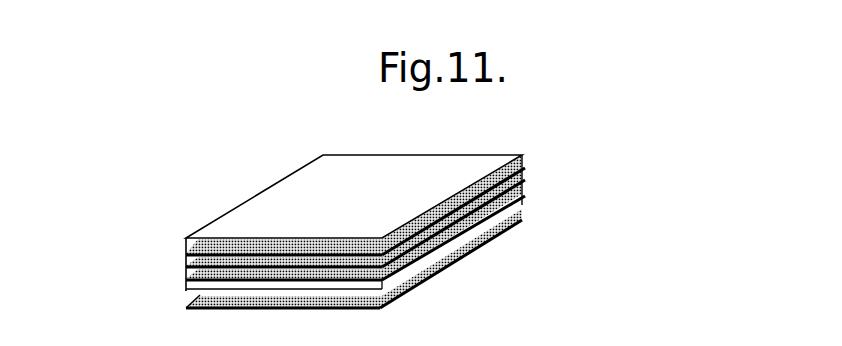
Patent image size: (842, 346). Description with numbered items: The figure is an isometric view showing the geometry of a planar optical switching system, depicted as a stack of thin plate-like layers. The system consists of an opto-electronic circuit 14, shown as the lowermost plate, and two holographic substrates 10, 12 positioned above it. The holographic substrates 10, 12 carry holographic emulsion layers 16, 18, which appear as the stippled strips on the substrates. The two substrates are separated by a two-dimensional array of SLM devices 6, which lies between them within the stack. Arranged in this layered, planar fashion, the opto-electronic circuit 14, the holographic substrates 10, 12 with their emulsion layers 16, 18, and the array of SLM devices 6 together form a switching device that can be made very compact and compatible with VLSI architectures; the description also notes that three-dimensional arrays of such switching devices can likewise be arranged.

The holographic substrate 12 is at (493, 158).
The SLM device 6 is at (522, 182).
The holographic substrate 10 is at (522, 205).
The opto-electronic circuit 14 is at (398, 300).
The holographic emulsion layer 16 is at (187, 254).
The holographic emulsion layer 18 is at (187, 283).